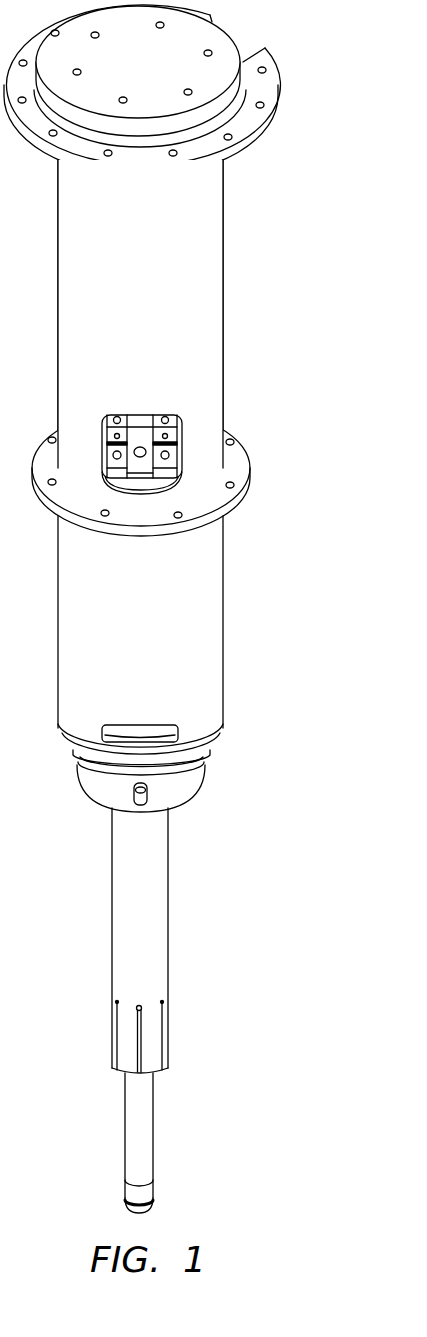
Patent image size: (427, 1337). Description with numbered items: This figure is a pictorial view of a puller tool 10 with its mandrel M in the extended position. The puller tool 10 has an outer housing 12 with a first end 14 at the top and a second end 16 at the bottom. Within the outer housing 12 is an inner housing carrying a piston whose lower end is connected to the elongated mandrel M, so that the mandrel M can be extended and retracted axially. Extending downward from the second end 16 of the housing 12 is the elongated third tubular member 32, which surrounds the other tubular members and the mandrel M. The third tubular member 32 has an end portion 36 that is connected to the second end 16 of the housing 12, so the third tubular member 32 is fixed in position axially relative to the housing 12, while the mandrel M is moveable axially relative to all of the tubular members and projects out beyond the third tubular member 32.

The puller tool 10 is at (237, 320).
The outer housing 12 is at (210, 617).
The first end 14 is at (232, 150).
The second end 16 is at (205, 768).
The third tubular member 32 is at (152, 930).
The end portion 36 is at (128, 822).
The mandrel M is at (143, 1110).